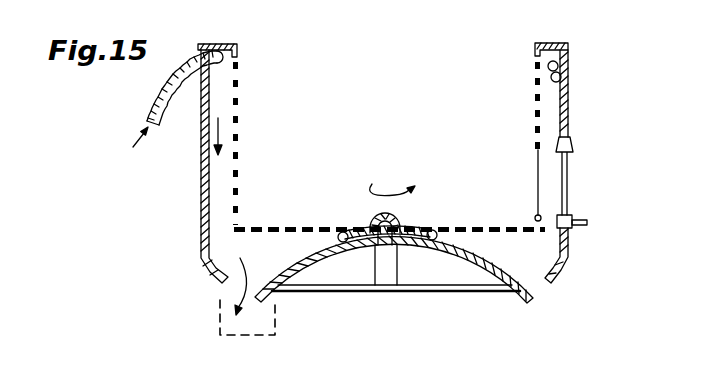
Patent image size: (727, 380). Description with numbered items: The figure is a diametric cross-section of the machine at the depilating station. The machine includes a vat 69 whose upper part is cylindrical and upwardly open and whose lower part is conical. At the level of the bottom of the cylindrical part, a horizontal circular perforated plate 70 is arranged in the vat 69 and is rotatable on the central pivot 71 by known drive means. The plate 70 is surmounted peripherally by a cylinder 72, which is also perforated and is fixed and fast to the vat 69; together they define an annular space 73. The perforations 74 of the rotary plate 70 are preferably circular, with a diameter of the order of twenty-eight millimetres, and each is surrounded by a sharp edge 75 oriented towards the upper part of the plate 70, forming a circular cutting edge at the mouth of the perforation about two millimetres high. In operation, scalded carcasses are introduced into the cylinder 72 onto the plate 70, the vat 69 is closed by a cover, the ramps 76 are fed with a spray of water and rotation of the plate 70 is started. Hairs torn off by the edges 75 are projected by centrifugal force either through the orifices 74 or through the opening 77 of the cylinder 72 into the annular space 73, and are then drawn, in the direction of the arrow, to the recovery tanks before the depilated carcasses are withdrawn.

The vat 69 is at (202, 247).
The horizontal circular perforated plate 70 is at (513, 232).
The central pivot 71 is at (392, 263).
The cylinder 72 is at (238, 108).
The annular space 73 is at (552, 110).
The perforations 74 is at (313, 226).
The sharp edge 75 is at (480, 226).
The ramps 76 is at (340, 241).
The opening 77 is at (535, 84).